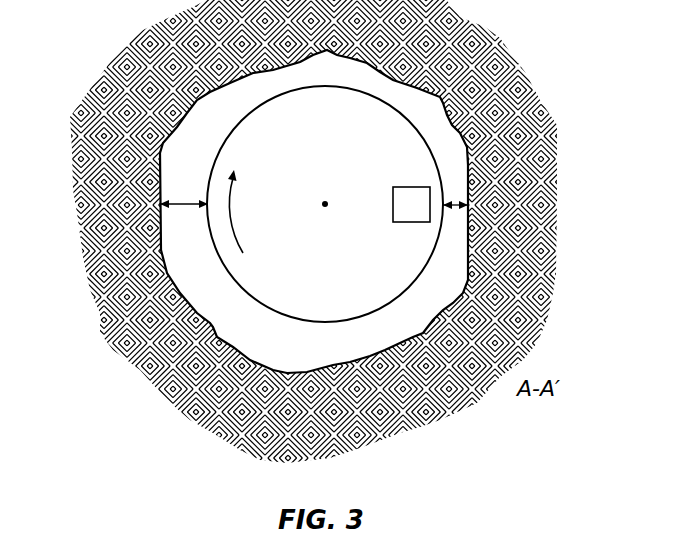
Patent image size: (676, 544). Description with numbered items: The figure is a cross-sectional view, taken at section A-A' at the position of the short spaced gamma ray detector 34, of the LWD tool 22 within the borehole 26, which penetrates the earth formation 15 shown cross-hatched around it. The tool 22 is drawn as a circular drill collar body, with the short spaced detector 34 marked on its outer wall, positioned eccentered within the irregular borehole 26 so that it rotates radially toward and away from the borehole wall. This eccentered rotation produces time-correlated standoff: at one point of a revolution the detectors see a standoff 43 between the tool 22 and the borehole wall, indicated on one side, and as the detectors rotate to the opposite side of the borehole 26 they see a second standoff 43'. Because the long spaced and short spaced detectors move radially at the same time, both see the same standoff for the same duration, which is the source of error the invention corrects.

The earth formation 15 is at (313, 231).
The borehole 26 is at (186, 137).
The LWD tool 22 is at (348, 141).
The short spaced gamma ray detector 34 is at (407, 223).
The standoff 43 is at (489, 234).
The second standoff 43' is at (146, 237).